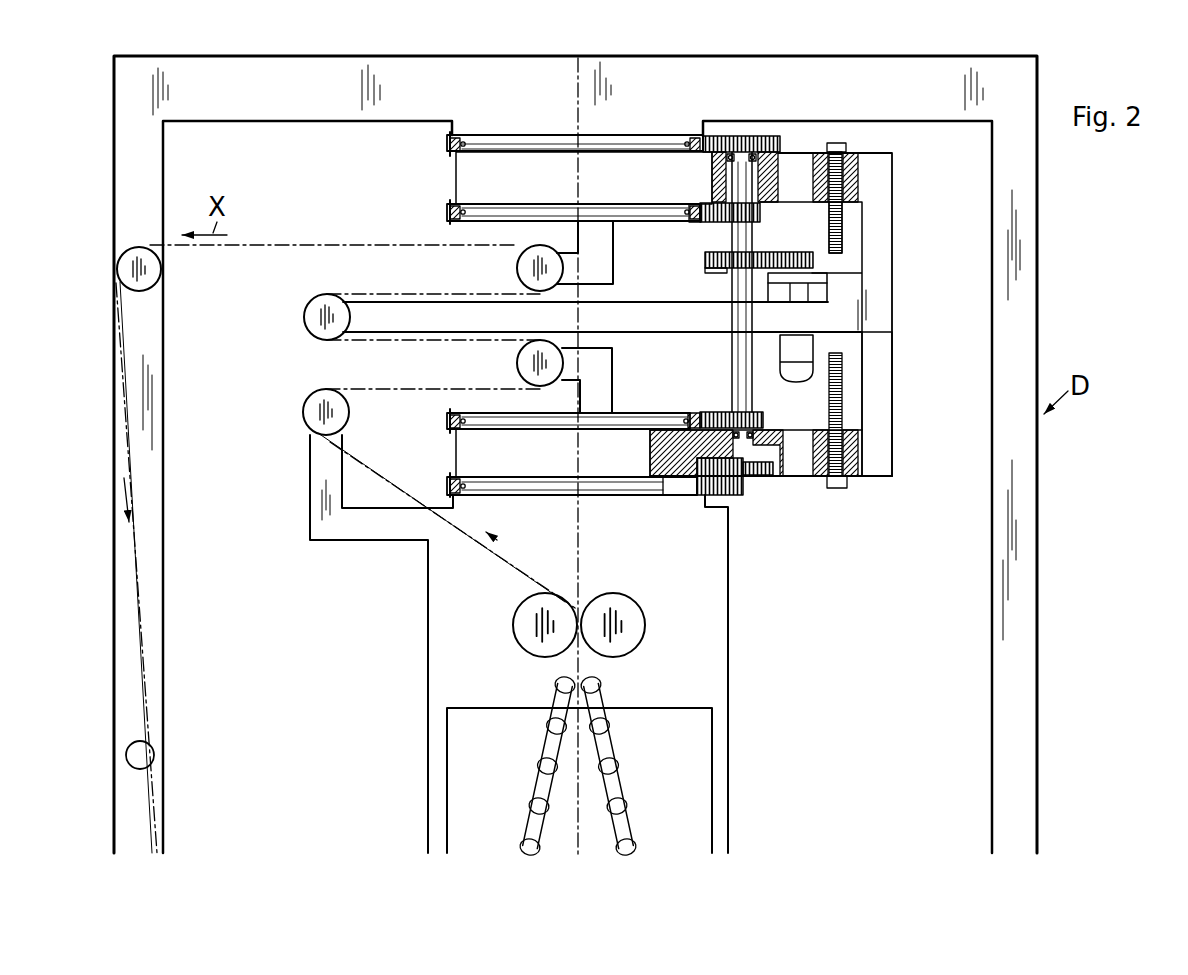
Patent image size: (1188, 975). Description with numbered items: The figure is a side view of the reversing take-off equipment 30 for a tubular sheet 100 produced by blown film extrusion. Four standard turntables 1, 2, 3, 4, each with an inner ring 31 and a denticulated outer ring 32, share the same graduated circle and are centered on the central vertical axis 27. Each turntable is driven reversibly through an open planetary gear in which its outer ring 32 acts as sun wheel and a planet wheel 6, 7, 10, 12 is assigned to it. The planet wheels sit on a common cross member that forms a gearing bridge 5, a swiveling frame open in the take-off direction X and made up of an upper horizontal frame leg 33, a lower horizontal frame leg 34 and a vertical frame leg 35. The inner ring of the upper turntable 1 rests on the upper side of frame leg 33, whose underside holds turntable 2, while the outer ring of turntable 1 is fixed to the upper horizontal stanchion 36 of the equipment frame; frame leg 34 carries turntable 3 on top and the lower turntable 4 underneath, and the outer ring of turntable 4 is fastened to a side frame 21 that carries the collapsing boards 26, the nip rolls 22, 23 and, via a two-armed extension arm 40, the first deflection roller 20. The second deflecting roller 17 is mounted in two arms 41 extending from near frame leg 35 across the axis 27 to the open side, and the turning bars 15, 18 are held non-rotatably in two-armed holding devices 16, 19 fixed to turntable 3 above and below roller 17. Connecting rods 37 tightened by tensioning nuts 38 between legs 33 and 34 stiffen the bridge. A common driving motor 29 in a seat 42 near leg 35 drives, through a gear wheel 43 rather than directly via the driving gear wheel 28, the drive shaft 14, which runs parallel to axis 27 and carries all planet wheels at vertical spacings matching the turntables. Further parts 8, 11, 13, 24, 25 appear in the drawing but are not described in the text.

The upper turntable 1 is at (440, 144).
The turntable 2 is at (440, 212).
The turntable 3 is at (440, 419).
The lower turntable 4 is at (441, 483).
The gearing bridge 5 is at (896, 186).
The planet wheel 6 is at (750, 135).
The planet wheel 7 is at (757, 214).
The bearing 8 is at (708, 220).
The planet wheel 10 is at (763, 415).
The bearing 11 is at (708, 417).
The planet wheel 12 is at (767, 477).
The gear 13 is at (723, 480).
The drive shaft 14 is at (742, 360).
The turning bar 15 is at (527, 268).
The holding device 16 is at (602, 263).
The deflecting roller 17 is at (308, 323).
The turning bar 18 is at (522, 362).
The holding device 19 is at (602, 377).
The deflection roller 20 is at (312, 419).
The side frame 21 is at (451, 600).
The nip roll 22 is at (632, 623).
The nip roll 23 is at (533, 643).
The deflection roller 24 is at (127, 272).
The side wall 25 is at (130, 602).
The collapsing boards 26 is at (616, 743).
The central vertical axis 27 is at (578, 547).
The driving gear wheel 28 is at (815, 260).
The driving motor 29 is at (803, 348).
The reversing take-off equipment 30 is at (908, 450).
The inner ring 31 is at (458, 200).
The denticulated outer ring 32 is at (697, 137).
The upper horizontal frame leg 33 is at (792, 168).
The lower horizontal frame leg 34 is at (797, 457).
The vertical frame leg 35 is at (880, 394).
The upper horizontal stanchion 36 is at (314, 102).
The connecting rods 37 is at (843, 223).
The tensioning nuts 38 is at (843, 150).
The extension arm 40 is at (373, 530).
The arms 41 is at (420, 333).
The seat 42 is at (847, 283).
The gear wheel 43 is at (707, 268).
The tubular sheet 100 is at (502, 553).